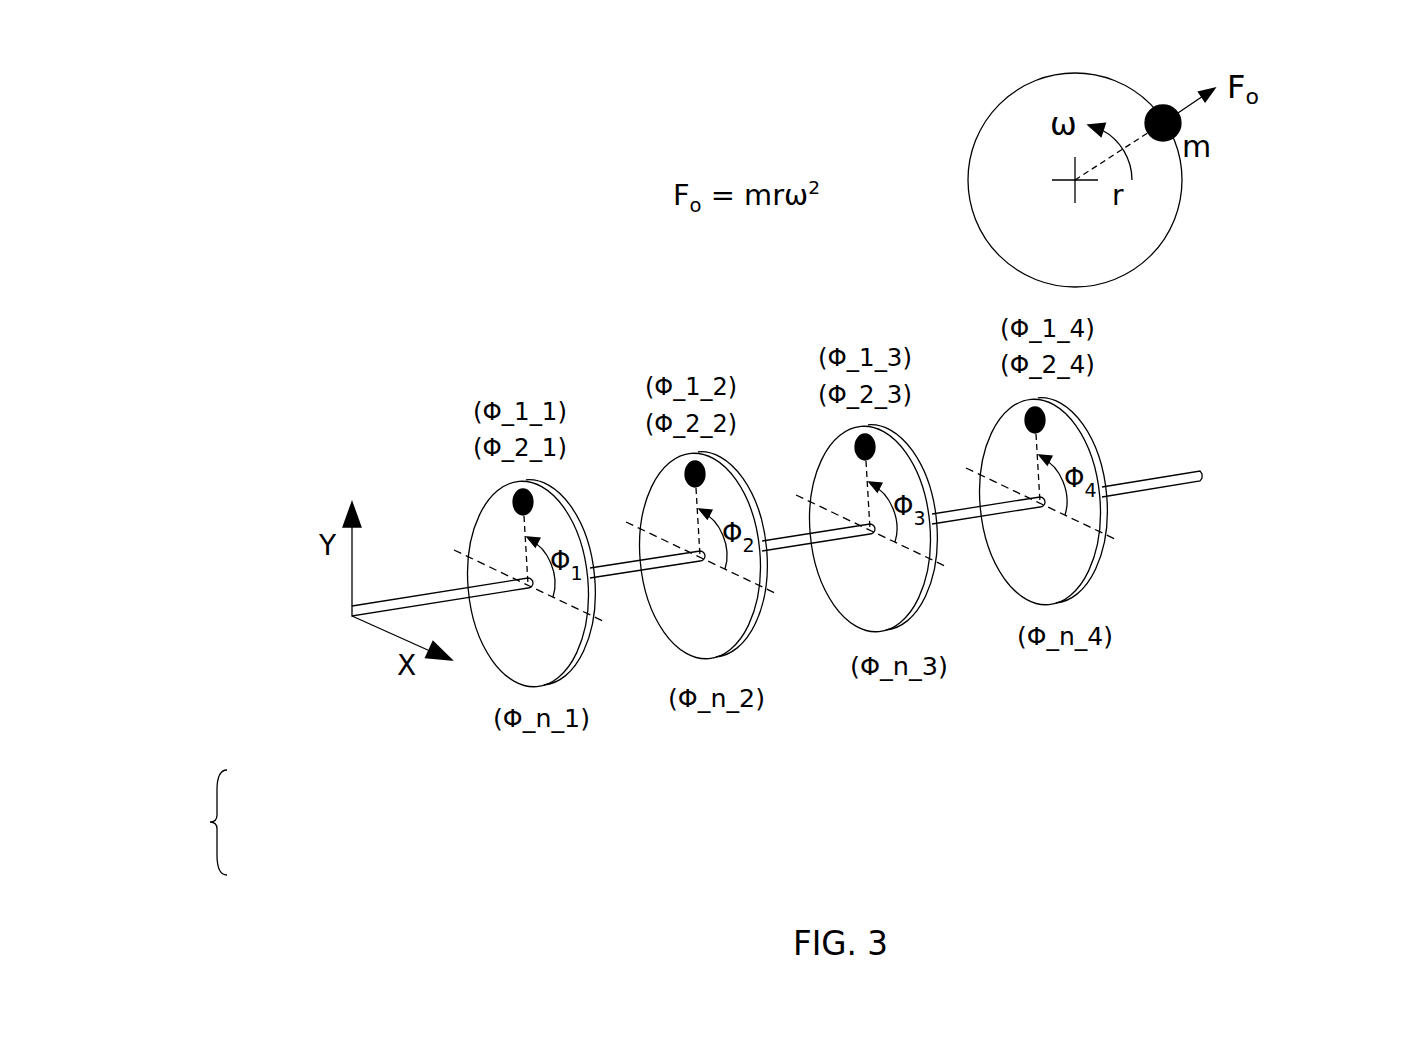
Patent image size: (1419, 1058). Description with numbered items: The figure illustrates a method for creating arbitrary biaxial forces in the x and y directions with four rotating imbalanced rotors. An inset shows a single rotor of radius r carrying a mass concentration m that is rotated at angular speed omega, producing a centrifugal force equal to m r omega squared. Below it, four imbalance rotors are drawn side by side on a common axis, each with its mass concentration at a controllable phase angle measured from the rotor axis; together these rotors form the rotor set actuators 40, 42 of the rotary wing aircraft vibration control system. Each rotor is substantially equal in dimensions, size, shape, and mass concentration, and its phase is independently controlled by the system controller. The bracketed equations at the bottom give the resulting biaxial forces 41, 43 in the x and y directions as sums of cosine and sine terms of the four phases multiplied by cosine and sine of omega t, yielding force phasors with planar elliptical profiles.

The first vibration control system actuator 40 is at (871, 542).
The second vibration control system actuator 42 is at (1247, 468).
The first biaxial force phasor 41 is at (721, 822).
The second biaxial force phasor 43 is at (721, 822).